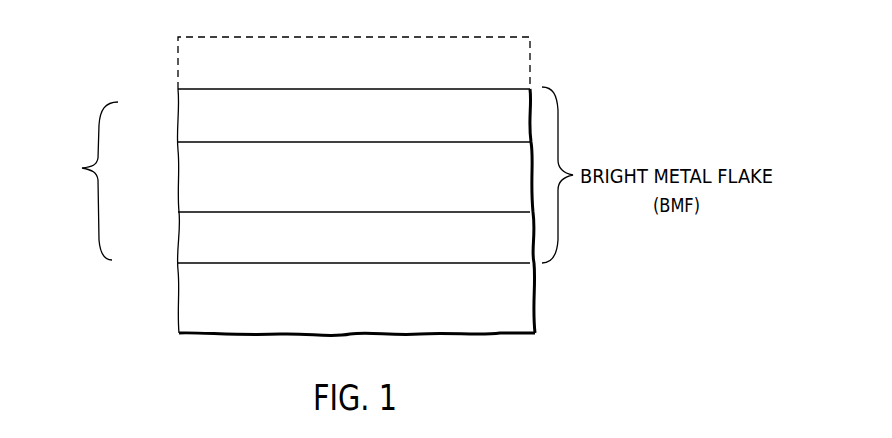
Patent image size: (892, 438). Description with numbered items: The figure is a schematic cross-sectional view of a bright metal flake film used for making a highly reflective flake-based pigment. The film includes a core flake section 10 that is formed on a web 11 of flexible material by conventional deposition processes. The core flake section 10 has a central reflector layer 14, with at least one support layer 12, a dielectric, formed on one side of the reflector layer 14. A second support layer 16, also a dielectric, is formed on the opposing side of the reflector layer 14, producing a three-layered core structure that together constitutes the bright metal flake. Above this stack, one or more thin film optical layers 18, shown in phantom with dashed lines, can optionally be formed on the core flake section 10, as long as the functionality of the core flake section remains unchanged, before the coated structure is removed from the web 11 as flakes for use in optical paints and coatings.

The core flake section 10 is at (86, 181).
The web 11 is at (195, 299).
The support layer 12 is at (197, 237).
The reflector layer 14 is at (197, 177).
The second support layer 16 is at (195, 116).
The thin film optical layer 18 is at (178, 53).